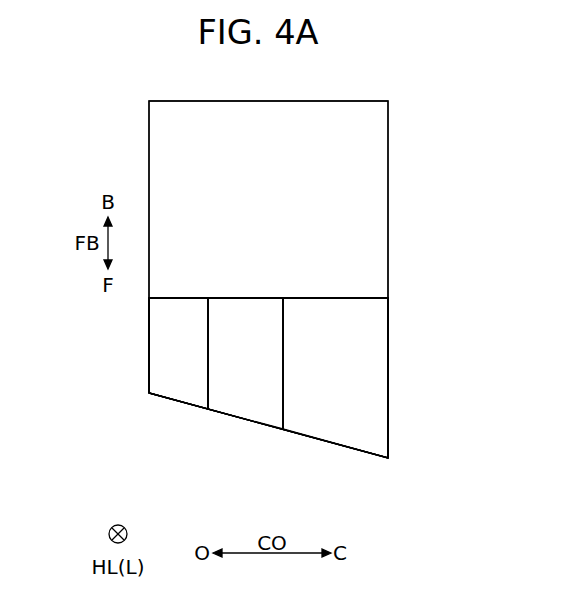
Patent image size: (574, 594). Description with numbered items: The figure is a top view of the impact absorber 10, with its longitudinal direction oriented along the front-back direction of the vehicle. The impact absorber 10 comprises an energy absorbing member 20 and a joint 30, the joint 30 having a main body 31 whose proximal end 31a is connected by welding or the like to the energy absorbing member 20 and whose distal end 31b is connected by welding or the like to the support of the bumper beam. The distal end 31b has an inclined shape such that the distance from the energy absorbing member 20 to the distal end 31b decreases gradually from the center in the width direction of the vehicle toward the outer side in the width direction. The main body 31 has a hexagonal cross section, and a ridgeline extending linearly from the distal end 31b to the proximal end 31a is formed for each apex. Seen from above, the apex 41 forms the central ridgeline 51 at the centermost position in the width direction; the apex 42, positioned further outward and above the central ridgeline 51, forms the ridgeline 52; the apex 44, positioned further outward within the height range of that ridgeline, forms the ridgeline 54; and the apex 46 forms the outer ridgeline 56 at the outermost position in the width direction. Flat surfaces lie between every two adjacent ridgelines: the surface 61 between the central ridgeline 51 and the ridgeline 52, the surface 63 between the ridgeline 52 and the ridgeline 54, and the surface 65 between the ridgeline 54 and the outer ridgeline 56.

The impact absorber 10 is at (121, 130).
The energy absorbing member 20 is at (258, 209).
The joint 30 is at (72, 310).
The main body 31 is at (150, 363).
The proximal end 31a is at (207, 298).
The distal end 31b is at (150, 389).
The surface 65 is at (168, 379).
The surface 63 is at (235, 379).
The surface 61 is at (323, 379).
The apex 46 is at (148, 400).
The outer ridgeline 56 is at (151, 384).
The apex 44 is at (208, 410).
The ridgeline 54 is at (207, 392).
The apex 42 is at (283, 431).
The ridgeline 52 is at (284, 402).
The apex 41 is at (387, 460).
The central ridgeline 51 is at (357, 411).